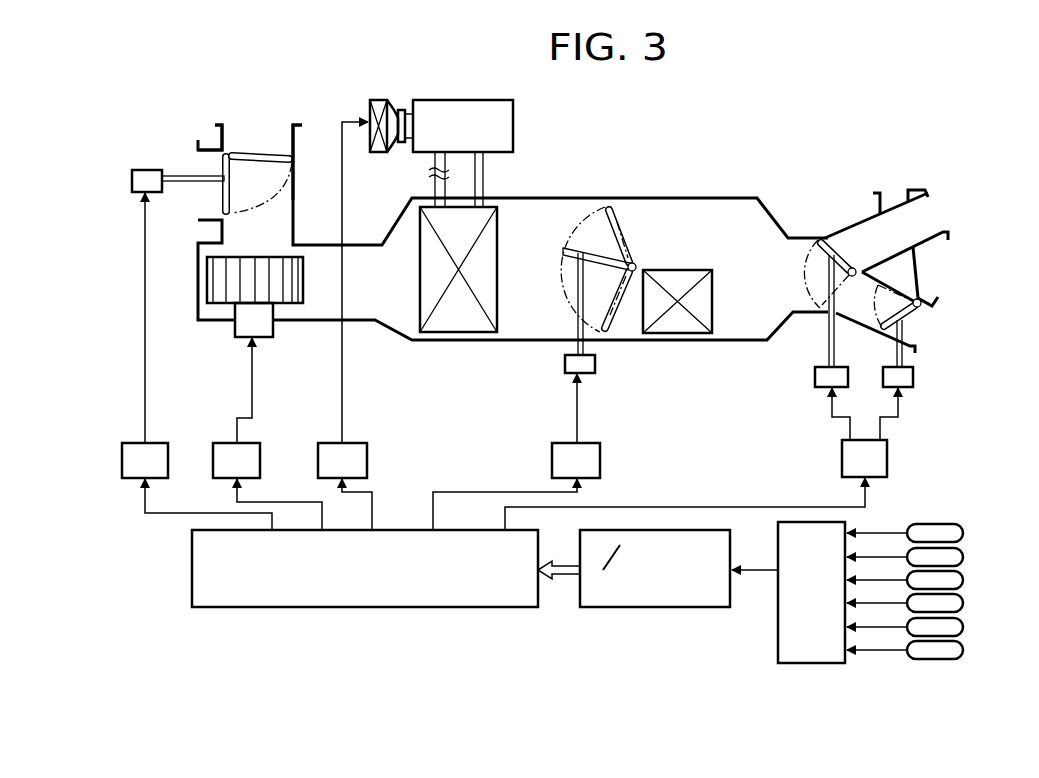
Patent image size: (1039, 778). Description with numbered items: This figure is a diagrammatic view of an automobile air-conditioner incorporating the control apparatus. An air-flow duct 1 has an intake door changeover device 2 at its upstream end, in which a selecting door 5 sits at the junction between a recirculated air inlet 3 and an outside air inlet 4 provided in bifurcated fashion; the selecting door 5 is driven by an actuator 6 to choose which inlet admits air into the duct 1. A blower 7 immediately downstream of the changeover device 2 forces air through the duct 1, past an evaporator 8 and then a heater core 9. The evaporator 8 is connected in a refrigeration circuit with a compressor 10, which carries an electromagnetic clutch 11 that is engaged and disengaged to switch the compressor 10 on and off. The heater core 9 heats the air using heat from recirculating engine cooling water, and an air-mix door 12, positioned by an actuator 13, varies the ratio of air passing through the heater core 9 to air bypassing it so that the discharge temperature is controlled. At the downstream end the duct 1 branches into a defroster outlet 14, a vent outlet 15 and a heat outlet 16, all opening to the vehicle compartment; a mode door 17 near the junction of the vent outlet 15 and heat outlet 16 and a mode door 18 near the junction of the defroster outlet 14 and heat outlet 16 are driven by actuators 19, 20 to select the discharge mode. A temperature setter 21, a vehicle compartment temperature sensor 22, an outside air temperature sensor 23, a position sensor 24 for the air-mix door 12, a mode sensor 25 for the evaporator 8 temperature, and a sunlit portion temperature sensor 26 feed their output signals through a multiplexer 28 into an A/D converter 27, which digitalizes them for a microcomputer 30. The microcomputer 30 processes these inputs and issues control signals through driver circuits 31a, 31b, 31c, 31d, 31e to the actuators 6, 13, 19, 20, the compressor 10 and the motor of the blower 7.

The air-flow duct 1 is at (694, 197).
The intake door changeover device 2 is at (247, 136).
The recirculated air inlet 3 is at (200, 165).
The outside air inlet 4 is at (279, 125).
The selecting door 5 is at (220, 200).
The actuator 6 is at (132, 180).
The blower 7 is at (210, 290).
The evaporator 8 is at (462, 326).
The heater core 9 is at (685, 335).
The compressor 10 is at (454, 100).
The electromagnetic clutch 11 is at (370, 108).
The air-mix door 12 is at (597, 252).
The actuator 13 is at (597, 365).
The defroster outlet 14 is at (887, 192).
The vent outlet 15 is at (927, 217).
The heat outlet 16 is at (923, 334).
The mode door 17 is at (824, 240).
The mode door 18 is at (919, 314).
The actuator 19 is at (815, 378).
The actuator 20 is at (913, 381).
The temperature setter 21 is at (963, 532).
The vehicle compartment temperature sensor 22 is at (963, 556).
The outside air temperature sensor 23 is at (963, 579).
The position sensor 24 is at (963, 602).
The mode sensor 25 is at (963, 626).
The sunlit portion temperature sensor 26 is at (963, 649).
The A/D converter 27 is at (693, 600).
The multiplexer 28 is at (778, 645).
The microcomputer 30 is at (450, 607).
The driver circuit 31a is at (125, 443).
The driver circuit 31b is at (557, 443).
The driver circuit 31c is at (887, 460).
The driver circuit 31d is at (360, 443).
The driver circuit 31e is at (220, 443).